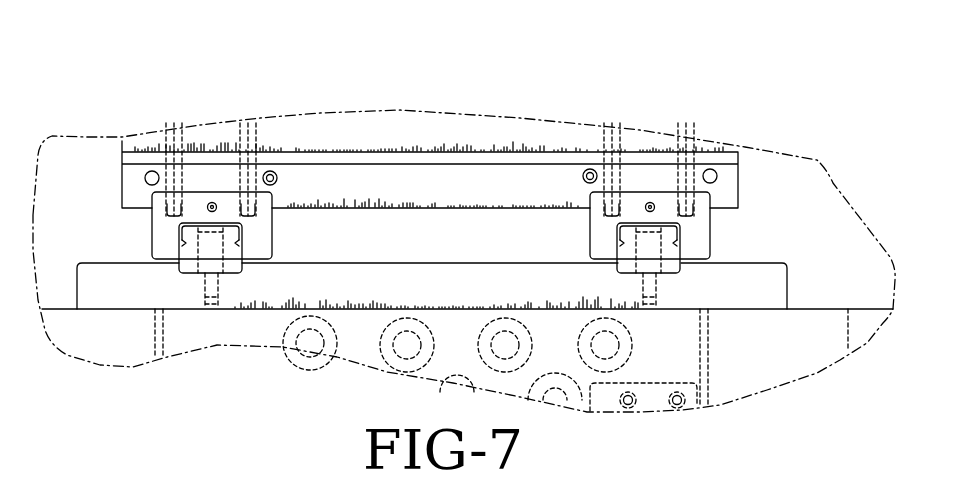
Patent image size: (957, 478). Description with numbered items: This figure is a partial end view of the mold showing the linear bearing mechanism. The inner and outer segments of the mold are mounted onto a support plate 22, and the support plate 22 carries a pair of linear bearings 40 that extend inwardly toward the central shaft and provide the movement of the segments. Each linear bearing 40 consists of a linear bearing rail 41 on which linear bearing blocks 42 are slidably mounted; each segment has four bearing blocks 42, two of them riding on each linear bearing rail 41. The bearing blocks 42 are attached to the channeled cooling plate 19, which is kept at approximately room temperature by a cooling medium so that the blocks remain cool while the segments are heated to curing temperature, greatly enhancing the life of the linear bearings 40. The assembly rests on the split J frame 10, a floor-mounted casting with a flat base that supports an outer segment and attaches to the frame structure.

The split J frame 10 is at (208, 325).
The support plate 22 is at (102, 288).
The channeled cooling plate 19 is at (470, 178).
The linear bearing 40 is at (637, 206).
The linear bearing rail 41 is at (187, 258).
The linear bearing block 42 is at (263, 220).